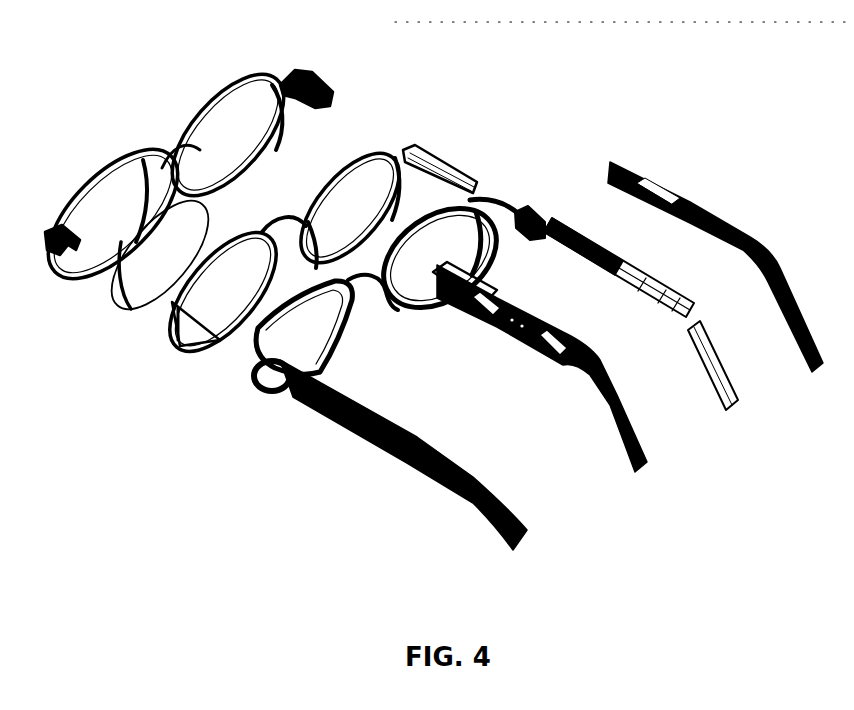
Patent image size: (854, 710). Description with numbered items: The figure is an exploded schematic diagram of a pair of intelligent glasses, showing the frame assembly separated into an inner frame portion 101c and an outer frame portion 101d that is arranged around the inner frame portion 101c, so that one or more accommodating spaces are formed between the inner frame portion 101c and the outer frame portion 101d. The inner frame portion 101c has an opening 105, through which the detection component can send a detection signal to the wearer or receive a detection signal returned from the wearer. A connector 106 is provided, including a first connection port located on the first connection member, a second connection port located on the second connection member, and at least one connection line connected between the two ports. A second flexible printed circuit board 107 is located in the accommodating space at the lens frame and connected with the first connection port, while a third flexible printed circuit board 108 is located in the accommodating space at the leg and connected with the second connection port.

The outer frame portion 101d is at (287, 72).
The inner frame portion 101c is at (493, 197).
The second flexible printed circuit board 107 is at (417, 147).
The connector 106 is at (530, 217).
The opening 105 is at (566, 357).
The third flexible printed circuit board 108 is at (600, 253).